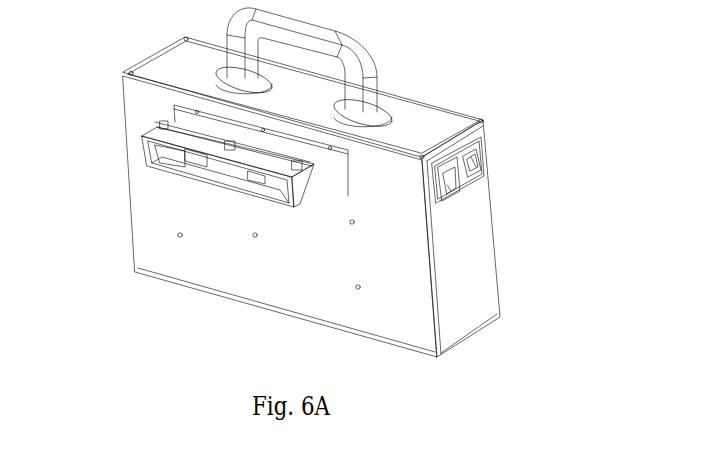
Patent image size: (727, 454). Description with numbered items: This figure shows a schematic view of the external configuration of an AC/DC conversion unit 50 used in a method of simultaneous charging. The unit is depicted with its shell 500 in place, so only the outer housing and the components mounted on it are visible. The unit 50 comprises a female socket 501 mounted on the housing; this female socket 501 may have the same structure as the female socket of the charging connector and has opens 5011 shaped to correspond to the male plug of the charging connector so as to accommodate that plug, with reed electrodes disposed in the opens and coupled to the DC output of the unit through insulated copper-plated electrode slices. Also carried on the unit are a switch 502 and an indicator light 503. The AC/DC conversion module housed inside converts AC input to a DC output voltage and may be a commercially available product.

The AC/DC conversion unit 50 is at (450, 79).
The shell 500 is at (213, 248).
The female socket 501 is at (195, 80).
The open 5011 is at (247, 177).
The switch 502 is at (202, 143).
The indicator light 503 is at (457, 178).